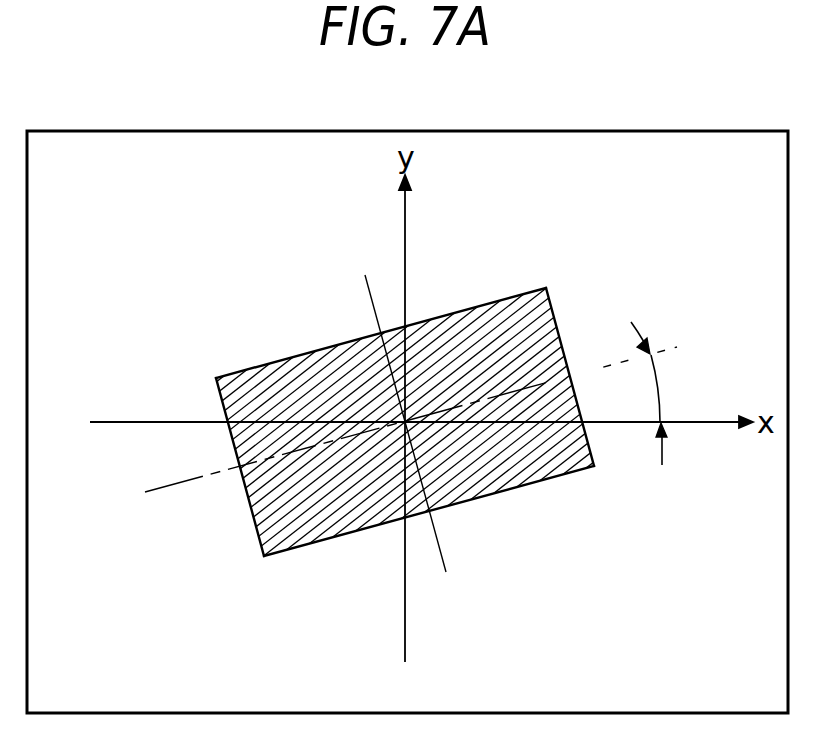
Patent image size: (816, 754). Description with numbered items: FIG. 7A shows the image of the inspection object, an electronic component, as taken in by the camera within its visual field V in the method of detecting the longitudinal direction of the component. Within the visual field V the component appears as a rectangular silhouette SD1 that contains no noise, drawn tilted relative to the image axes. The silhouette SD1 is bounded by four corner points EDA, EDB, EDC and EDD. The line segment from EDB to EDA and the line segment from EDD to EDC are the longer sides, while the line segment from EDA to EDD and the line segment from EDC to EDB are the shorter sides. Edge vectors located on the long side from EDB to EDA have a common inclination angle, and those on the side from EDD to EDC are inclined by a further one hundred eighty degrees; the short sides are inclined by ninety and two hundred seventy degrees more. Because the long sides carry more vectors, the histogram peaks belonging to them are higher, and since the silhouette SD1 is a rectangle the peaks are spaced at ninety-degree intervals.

The visual field V is at (698, 126).
The silhouette SD1 is at (408, 389).
The corner point EDA is at (547, 289).
The corner point EDB is at (216, 378).
The corner point EDC is at (264, 557).
The corner point EDD is at (594, 467).